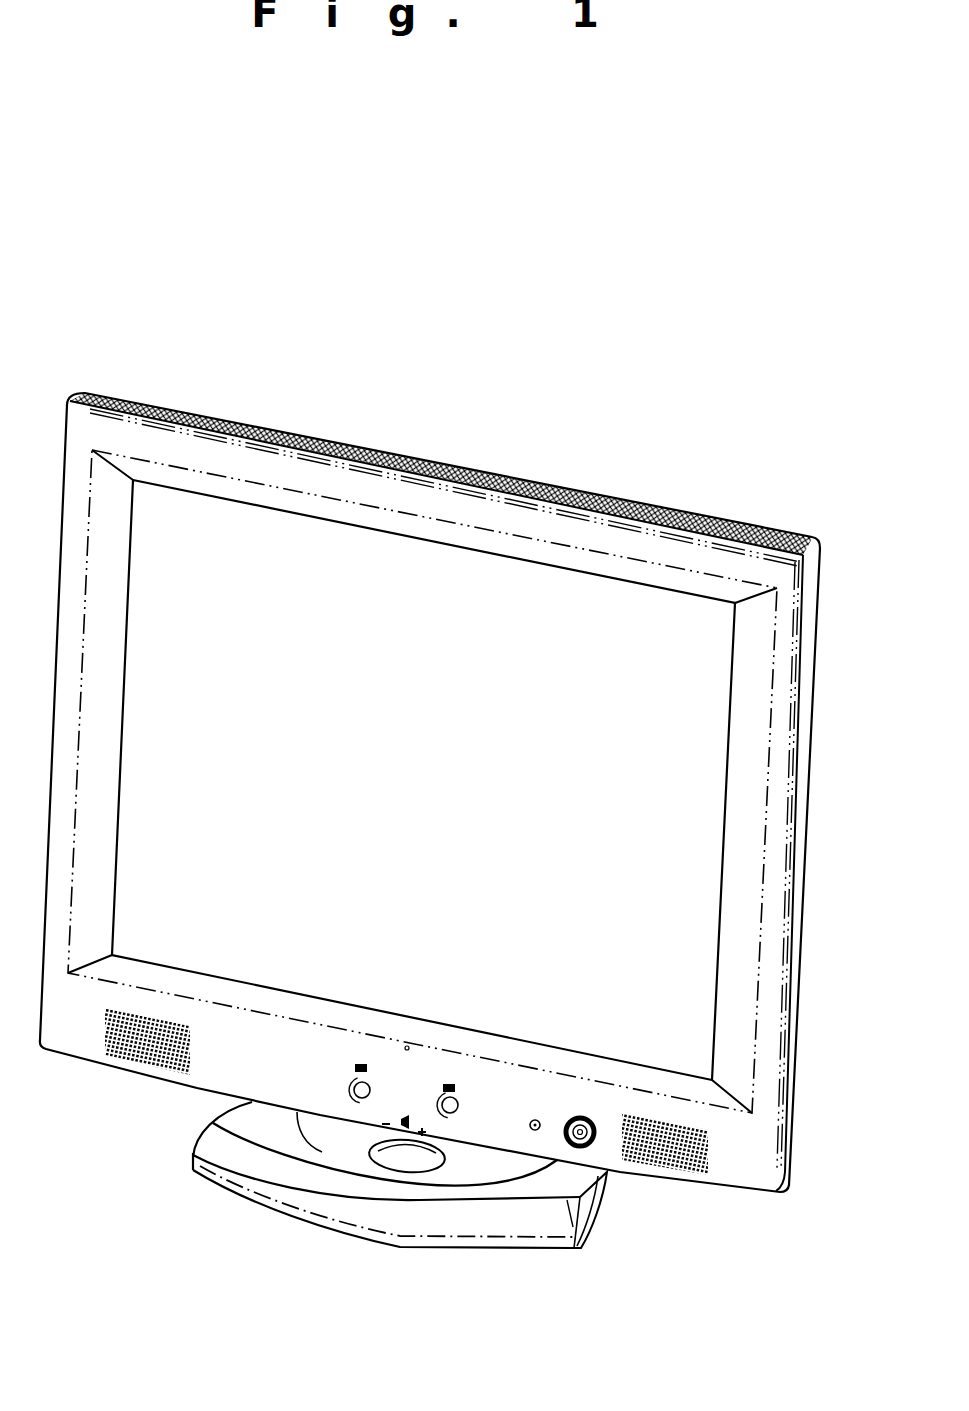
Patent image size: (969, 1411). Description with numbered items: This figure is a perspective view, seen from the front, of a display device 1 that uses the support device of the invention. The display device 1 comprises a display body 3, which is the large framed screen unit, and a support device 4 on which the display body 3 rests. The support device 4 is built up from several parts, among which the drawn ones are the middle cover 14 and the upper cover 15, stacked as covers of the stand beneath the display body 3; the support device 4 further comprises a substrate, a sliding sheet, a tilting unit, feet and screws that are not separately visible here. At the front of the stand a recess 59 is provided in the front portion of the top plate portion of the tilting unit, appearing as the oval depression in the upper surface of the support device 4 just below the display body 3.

The display device 1 is at (397, 360).
The display body 3 is at (799, 830).
The support device 4 is at (530, 1252).
The middle cover 14 is at (297, 1112).
The upper cover 15 is at (318, 1197).
The recess 59 is at (407, 1147).